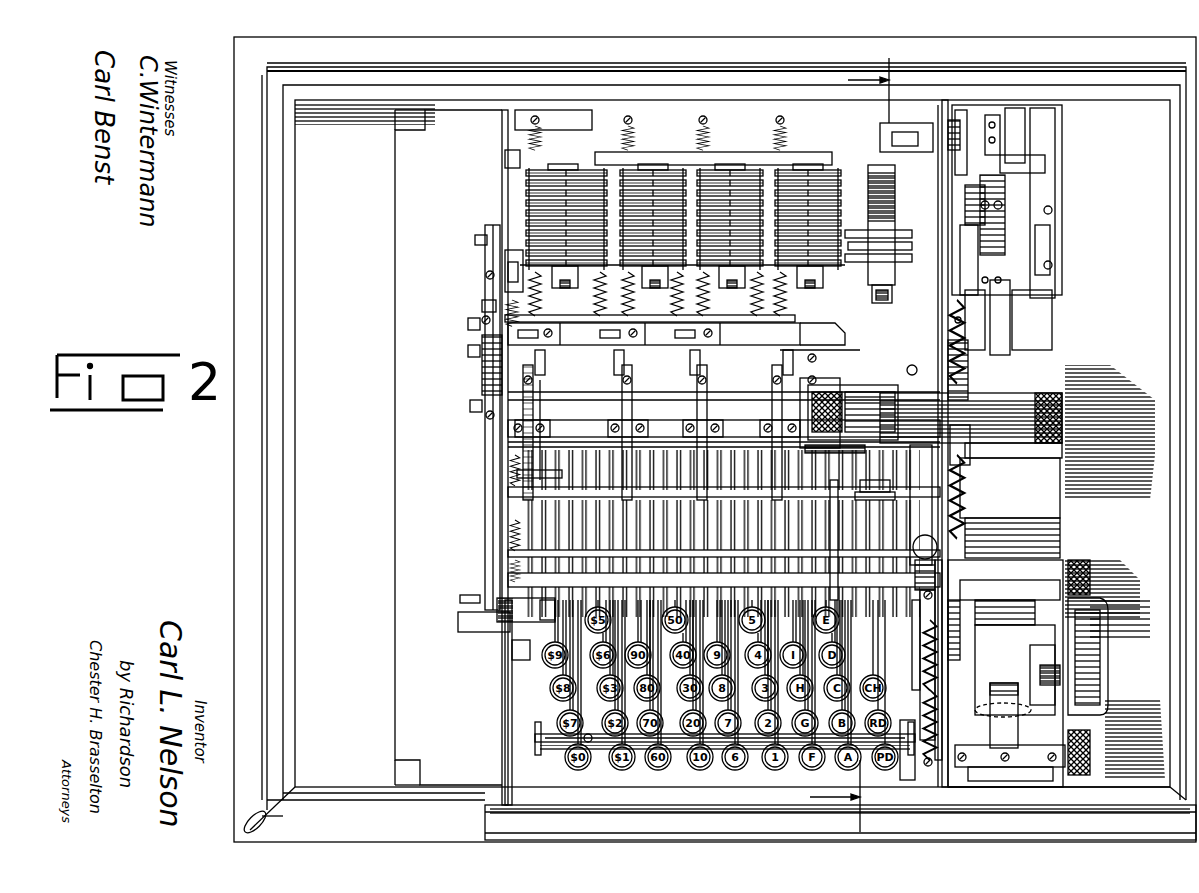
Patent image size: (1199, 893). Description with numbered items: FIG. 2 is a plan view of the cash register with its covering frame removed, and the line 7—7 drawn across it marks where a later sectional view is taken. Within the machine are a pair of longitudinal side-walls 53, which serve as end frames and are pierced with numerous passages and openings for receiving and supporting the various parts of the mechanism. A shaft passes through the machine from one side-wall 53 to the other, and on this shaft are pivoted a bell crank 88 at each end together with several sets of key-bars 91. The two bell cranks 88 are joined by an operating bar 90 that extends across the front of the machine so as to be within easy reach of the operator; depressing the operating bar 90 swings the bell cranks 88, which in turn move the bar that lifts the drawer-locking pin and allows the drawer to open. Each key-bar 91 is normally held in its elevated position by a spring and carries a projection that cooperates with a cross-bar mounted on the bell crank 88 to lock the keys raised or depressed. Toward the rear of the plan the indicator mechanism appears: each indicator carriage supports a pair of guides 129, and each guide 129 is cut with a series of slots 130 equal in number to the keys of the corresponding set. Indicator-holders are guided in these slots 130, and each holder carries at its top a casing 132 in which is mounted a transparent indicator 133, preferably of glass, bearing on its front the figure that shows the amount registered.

The section line 7 is at (852, 436).
The longitudinal side-walls 53 is at (502, 462).
The bell crank 88 is at (508, 733).
The operating bar 90 is at (685, 830).
The key-bars 91 is at (582, 768).
The guides 129 is at (877, 157).
The slots 130 is at (893, 185).
The casing 132 is at (870, 168).
The indicator 133 is at (823, 272).